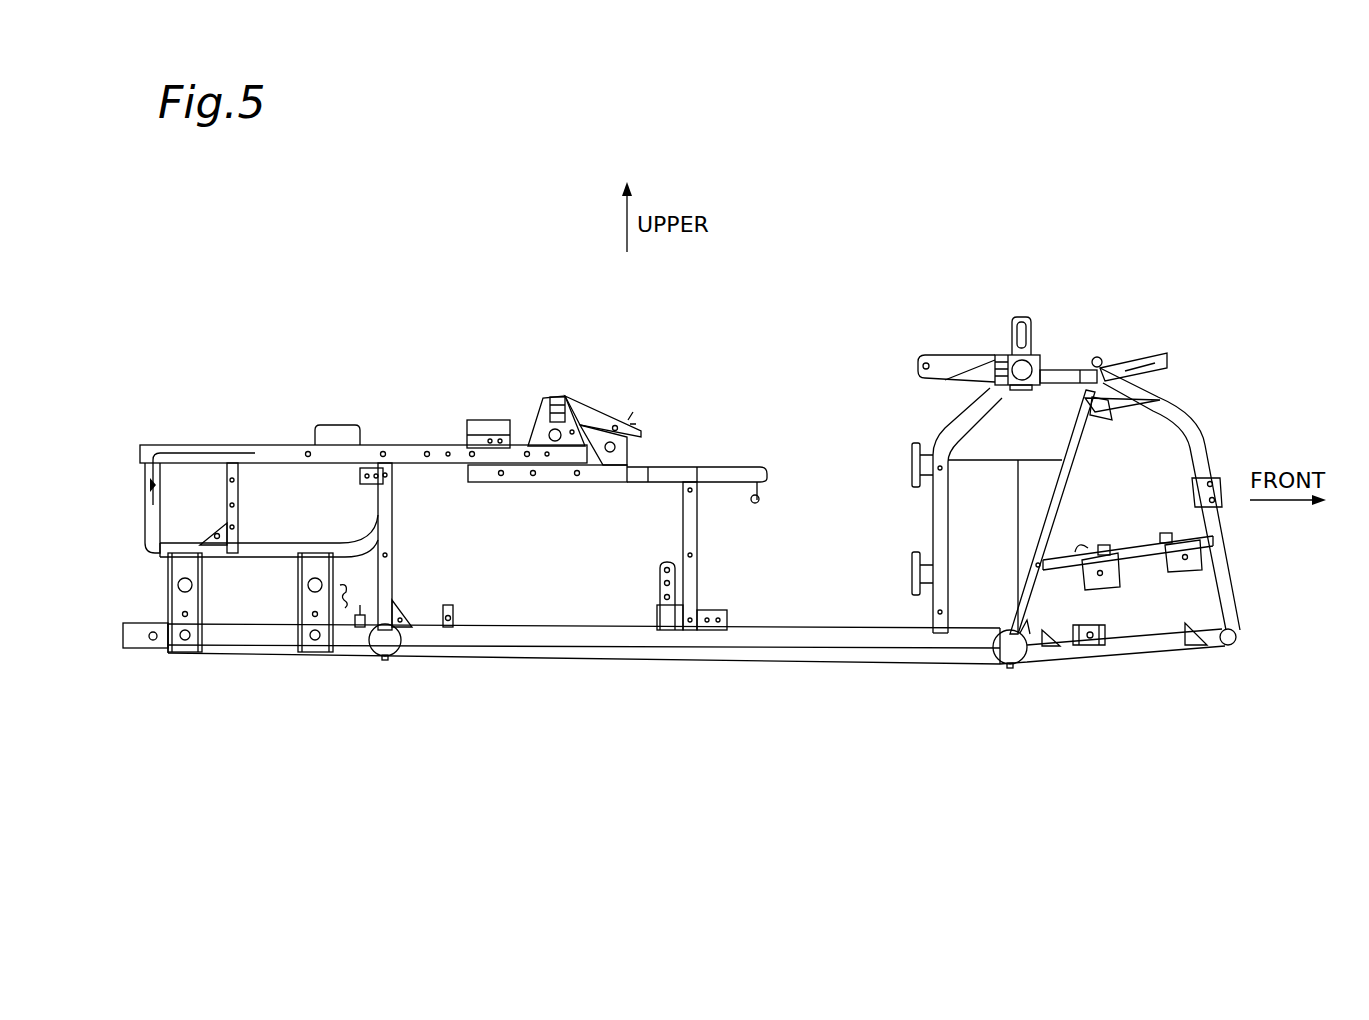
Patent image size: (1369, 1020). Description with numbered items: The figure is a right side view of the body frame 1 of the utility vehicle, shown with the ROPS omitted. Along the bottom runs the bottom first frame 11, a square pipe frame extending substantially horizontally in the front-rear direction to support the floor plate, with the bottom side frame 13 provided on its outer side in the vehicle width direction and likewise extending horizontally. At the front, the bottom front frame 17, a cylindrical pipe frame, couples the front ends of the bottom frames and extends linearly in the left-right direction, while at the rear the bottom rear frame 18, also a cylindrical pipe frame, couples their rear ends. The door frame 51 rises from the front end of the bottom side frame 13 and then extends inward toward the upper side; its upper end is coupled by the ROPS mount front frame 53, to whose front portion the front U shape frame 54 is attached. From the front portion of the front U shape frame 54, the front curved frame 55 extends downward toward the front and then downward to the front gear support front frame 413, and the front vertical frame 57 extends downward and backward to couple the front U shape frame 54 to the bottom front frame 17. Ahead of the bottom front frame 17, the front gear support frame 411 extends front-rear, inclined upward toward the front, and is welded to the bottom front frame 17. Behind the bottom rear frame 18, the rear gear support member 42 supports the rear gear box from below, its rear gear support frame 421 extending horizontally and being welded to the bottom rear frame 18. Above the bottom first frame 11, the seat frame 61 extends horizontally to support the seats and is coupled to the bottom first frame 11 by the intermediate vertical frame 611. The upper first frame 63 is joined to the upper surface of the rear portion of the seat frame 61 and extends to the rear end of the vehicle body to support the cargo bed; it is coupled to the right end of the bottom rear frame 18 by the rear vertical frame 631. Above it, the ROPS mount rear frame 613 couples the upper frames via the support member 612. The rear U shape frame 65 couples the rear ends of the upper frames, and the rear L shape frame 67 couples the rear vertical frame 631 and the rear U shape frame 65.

The body frame 1 is at (1131, 300).
The bottom first frame 11 is at (432, 648).
The bottom side frame 13 is at (620, 640).
The bottom front frame 17 is at (1022, 667).
The bottom rear frame 18 is at (391, 658).
The rear gear support member 42 is at (211, 672).
The front gear support frame 411 is at (1137, 648).
The front gear support front frame 413 is at (1242, 650).
The rear gear support frame 421 is at (253, 652).
The door frame 51 is at (942, 565).
The ROPS mount front frame 53 is at (1002, 353).
The front U shape frame 54 is at (1065, 370).
The front curved frame 55 is at (1202, 430).
The front vertical frame 57 is at (1057, 507).
The seat frame 61 is at (675, 466).
The intermediate vertical frame 611 is at (692, 572).
The support member 612 is at (541, 420).
The ROPS mount rear frame 613 is at (557, 397).
The upper first frame 63 is at (407, 455).
The rear vertical frame 631 is at (387, 527).
The rear U shape frame 65 is at (148, 520).
The rear L shape frame 67 is at (281, 557).